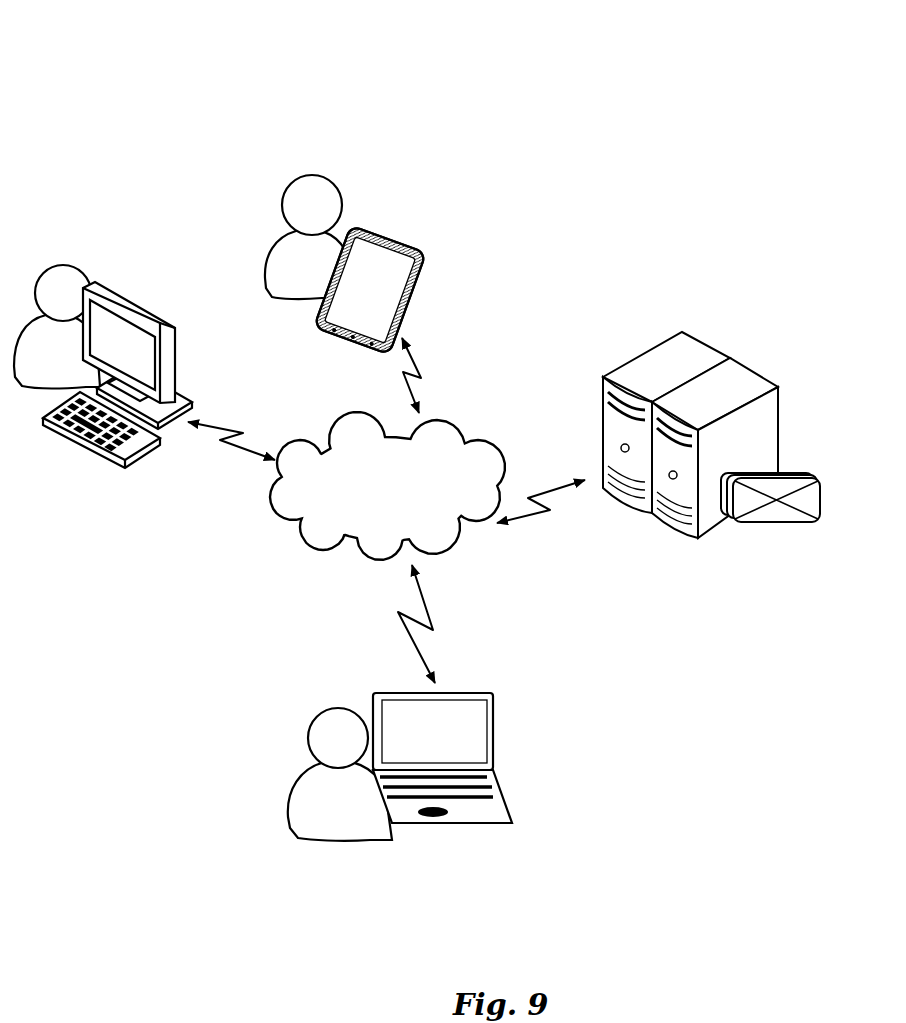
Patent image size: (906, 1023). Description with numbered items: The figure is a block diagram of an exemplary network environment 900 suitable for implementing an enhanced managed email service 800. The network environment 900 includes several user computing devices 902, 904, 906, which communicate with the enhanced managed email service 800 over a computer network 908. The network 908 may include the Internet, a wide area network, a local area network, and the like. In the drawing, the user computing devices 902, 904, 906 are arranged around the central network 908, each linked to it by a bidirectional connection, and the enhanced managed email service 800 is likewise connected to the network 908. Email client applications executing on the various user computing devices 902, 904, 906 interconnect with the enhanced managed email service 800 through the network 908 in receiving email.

The network environment 900 is at (89, 113).
The user computing device 902 is at (420, 240).
The user computing device 904 is at (123, 290).
The user computing device 906 is at (477, 692).
The network 908 is at (371, 513).
The enhanced managed email service 800 is at (718, 357).